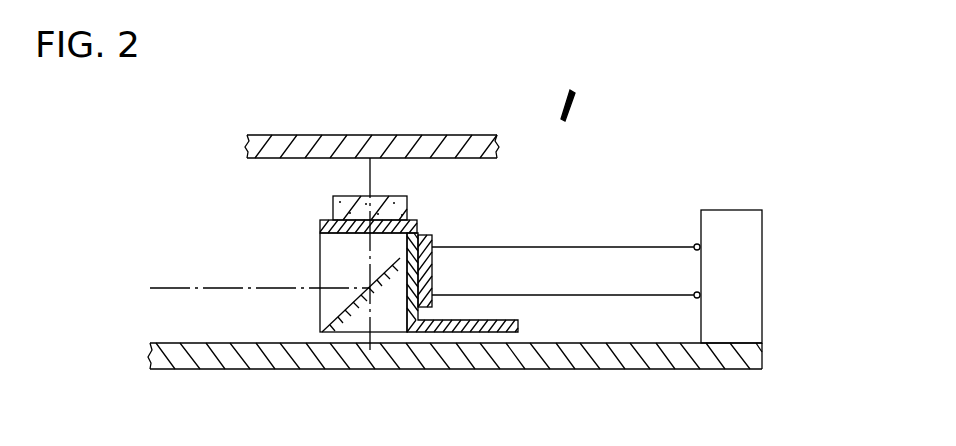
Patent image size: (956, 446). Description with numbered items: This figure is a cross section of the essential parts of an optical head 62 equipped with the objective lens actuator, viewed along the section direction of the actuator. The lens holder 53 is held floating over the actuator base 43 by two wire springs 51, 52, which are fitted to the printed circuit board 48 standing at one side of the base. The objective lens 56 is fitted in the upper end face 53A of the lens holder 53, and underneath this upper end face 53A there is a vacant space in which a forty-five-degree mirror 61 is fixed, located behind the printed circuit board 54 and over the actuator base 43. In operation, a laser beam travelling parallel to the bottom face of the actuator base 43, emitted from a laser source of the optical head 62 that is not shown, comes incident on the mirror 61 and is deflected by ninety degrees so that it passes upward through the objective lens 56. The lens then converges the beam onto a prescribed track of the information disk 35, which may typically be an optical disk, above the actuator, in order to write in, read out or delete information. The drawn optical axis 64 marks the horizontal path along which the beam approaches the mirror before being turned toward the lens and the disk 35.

The information disk 35 is at (436, 137).
The actuator base 43 is at (505, 362).
The printed circuit board 48 is at (737, 210).
The wire spring 51 is at (597, 246).
The wire spring 52 is at (582, 295).
The lens holder 53 is at (321, 258).
The upper end face 53A is at (322, 221).
The printed circuit board 54 is at (432, 275).
The objective lens 56 is at (408, 205).
The 45-degree mirror 61 is at (373, 307).
The optical head 62 is at (572, 92).
The optical axis 64 is at (188, 287).